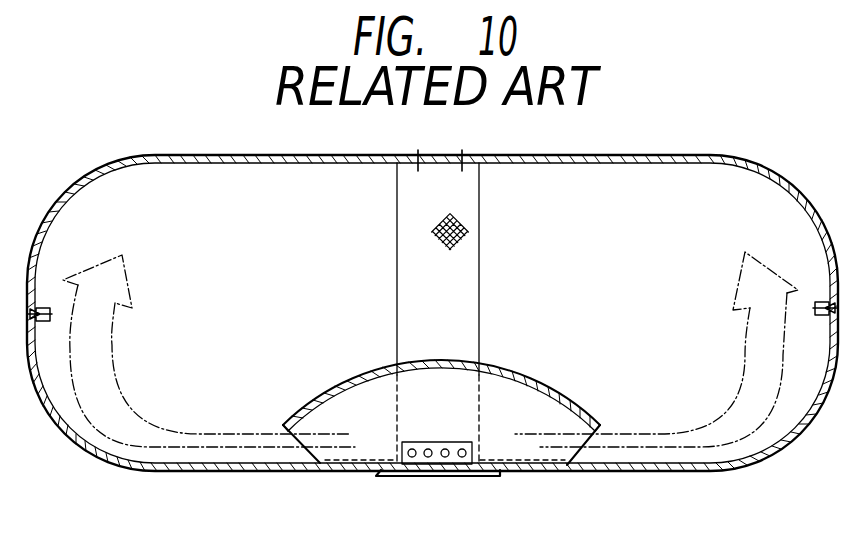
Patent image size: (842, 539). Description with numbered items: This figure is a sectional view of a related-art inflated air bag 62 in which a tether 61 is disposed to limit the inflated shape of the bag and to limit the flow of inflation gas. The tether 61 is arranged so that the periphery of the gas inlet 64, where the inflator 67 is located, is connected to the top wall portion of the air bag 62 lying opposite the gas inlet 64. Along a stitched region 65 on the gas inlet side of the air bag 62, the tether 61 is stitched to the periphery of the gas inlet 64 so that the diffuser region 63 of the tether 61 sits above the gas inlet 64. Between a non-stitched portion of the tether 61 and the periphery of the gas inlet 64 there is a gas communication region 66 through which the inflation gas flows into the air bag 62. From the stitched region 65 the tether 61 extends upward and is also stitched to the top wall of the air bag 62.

The tether 61 is at (468, 295).
The air bag 62 is at (701, 153).
The diffuser region 63 is at (345, 388).
The gas inlet 64 is at (412, 464).
The stitched region 65 is at (352, 458).
The gas communication region 66 is at (303, 452).
The inflator 67 is at (423, 441).